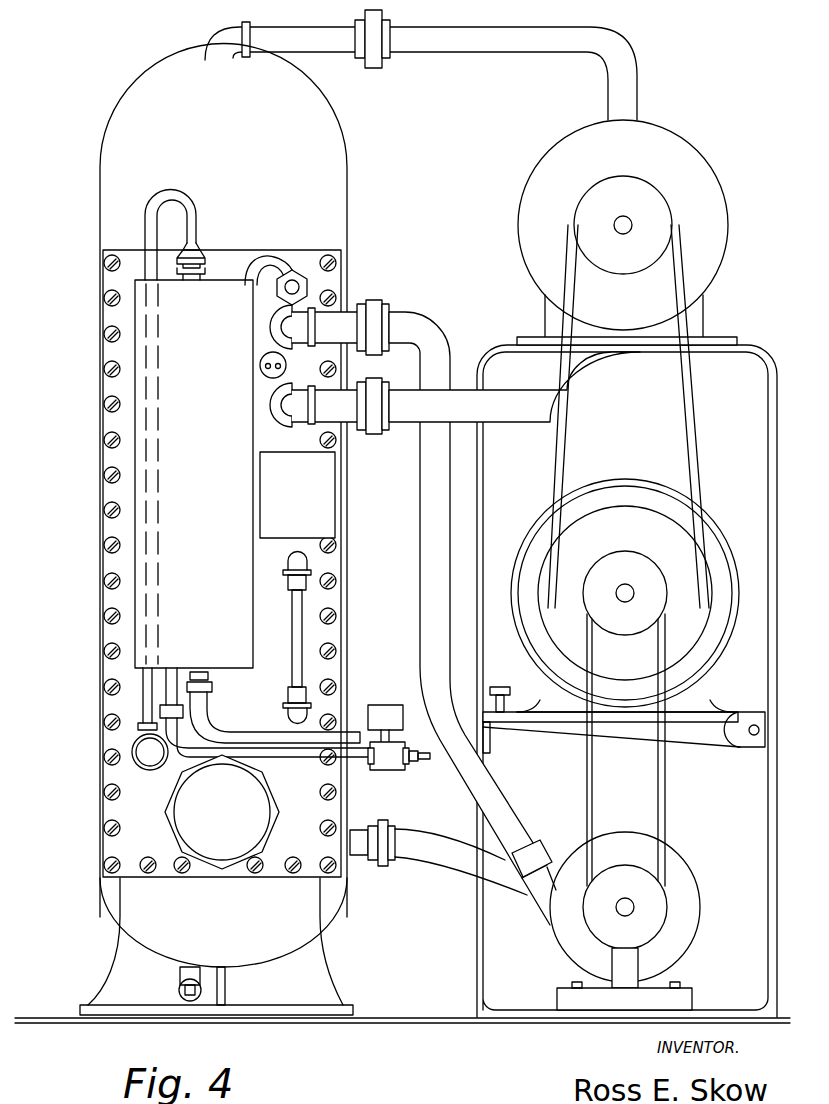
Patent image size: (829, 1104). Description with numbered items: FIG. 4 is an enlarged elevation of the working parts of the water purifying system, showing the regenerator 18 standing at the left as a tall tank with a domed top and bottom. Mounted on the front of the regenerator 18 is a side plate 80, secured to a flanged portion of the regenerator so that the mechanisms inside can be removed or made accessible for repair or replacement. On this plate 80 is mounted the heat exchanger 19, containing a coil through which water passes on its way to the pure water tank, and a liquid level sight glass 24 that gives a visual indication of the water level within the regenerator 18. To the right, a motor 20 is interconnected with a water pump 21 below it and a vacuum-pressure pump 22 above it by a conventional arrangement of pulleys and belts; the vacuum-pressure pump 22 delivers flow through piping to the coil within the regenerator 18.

The regenerator 18 is at (347, 214).
The heat exchanger 19 is at (133, 453).
The motor 20 is at (723, 660).
The water pump 21 is at (702, 920).
The vacuum-pressure pump 22 is at (727, 200).
The liquid level sight glass 24 is at (303, 612).
The side plate 80 is at (120, 808).